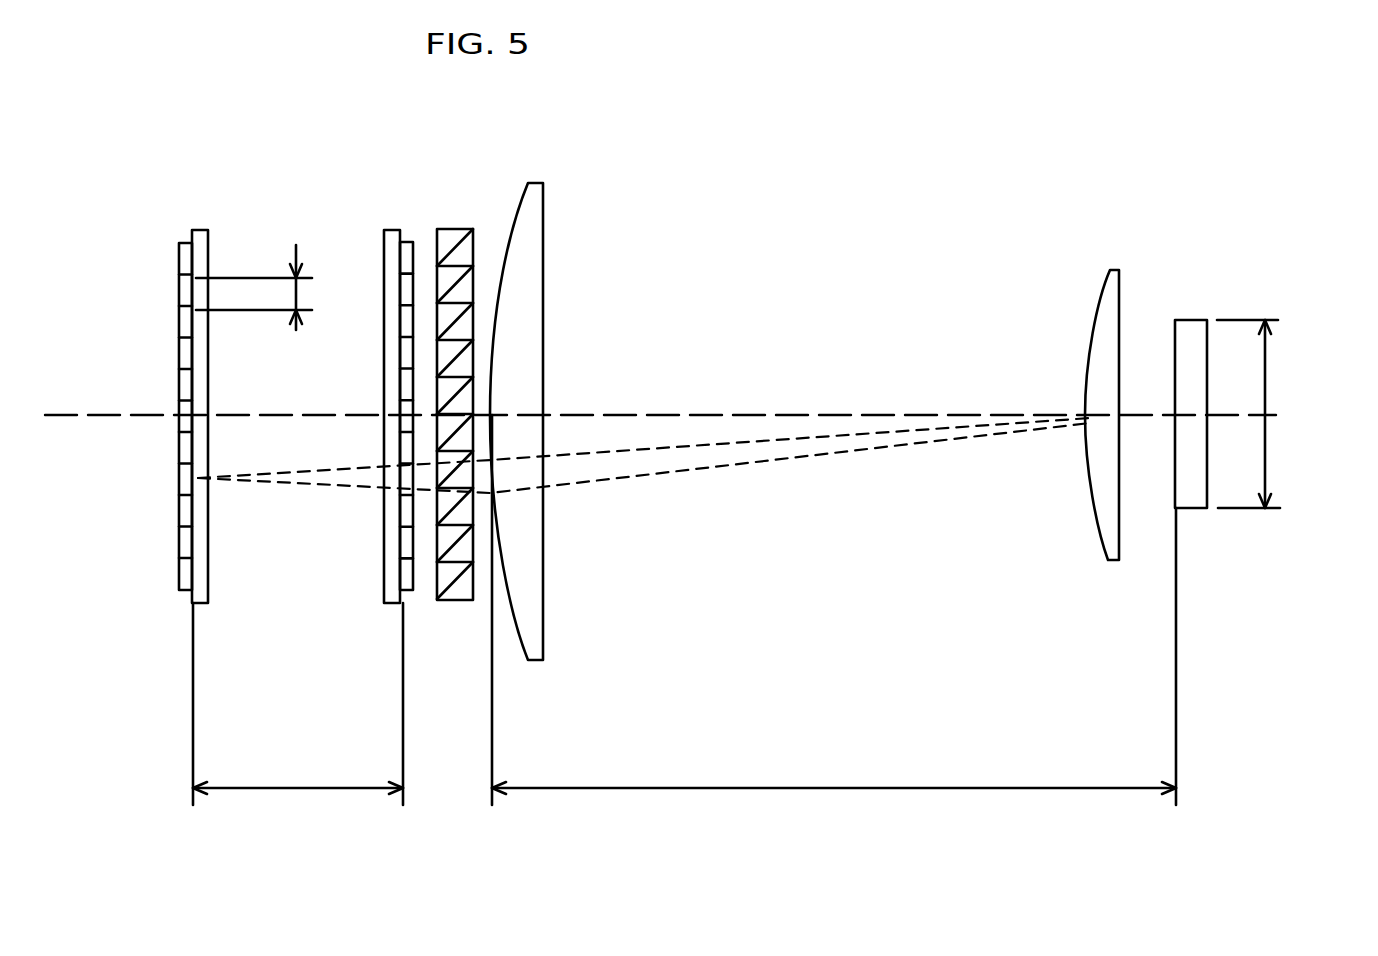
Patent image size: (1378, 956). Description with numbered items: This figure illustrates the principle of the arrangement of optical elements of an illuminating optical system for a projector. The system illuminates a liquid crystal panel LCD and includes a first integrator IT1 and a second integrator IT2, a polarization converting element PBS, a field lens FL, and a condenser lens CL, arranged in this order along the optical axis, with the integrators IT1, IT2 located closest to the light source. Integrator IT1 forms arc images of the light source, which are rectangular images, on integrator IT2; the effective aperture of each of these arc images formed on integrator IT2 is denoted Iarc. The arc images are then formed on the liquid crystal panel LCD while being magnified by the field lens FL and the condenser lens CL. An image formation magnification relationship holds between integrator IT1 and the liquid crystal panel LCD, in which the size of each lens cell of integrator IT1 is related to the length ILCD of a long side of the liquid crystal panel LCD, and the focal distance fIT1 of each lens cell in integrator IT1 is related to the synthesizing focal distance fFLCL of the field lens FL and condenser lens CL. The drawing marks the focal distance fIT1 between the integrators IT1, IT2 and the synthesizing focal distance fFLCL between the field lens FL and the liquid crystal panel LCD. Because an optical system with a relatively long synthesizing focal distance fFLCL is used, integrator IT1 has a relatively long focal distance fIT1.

The integrator IT1 is at (196, 367).
The integrator IT2 is at (386, 367).
The polarization converting element PBS is at (454, 388).
The field lens FL is at (522, 396).
The condenser lens CL is at (1111, 388).
The liquid crystal panel LCD is at (1190, 386).
The effective aperture of arc image Iarc is at (257, 320).
The length of long side of LCD ILCD is at (1286, 414).
The focal distance of lens cell in IT1 fIT1 is at (298, 704).
The FL·CL synthesizing focal distance fFLCL is at (834, 610).